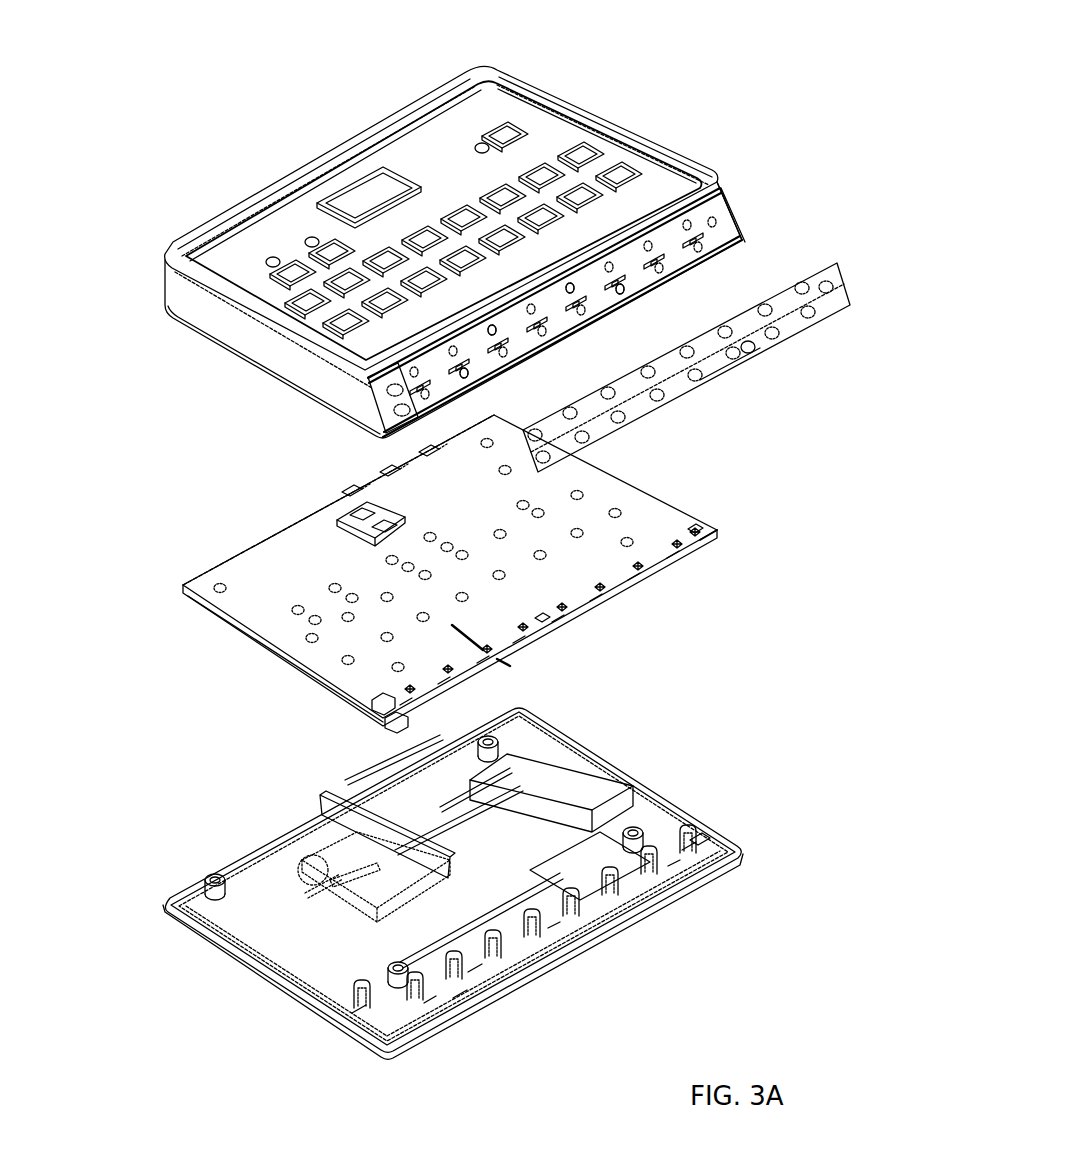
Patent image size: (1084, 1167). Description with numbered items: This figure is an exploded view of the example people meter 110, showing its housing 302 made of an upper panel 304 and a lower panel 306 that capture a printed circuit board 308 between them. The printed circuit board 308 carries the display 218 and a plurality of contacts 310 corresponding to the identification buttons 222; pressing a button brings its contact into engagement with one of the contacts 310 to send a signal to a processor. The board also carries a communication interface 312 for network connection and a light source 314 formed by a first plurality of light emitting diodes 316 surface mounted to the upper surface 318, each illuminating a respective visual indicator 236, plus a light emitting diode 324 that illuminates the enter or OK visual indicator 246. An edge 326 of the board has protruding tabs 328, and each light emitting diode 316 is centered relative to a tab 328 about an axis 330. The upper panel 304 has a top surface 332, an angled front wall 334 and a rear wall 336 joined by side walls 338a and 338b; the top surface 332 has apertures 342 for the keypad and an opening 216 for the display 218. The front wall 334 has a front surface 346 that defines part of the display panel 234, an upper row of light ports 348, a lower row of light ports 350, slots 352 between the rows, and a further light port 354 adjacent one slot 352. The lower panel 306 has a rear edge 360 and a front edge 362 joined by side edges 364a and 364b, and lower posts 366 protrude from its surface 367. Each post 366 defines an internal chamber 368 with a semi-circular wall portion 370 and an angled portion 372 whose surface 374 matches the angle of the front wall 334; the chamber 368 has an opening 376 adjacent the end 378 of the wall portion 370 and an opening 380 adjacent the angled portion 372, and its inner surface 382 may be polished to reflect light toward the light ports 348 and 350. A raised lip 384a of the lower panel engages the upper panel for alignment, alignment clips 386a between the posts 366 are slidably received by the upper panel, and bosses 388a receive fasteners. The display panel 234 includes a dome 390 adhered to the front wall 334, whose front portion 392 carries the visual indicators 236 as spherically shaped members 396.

The people meter 110 is at (740, 133).
The housing 302 is at (162, 207).
The upper panel 304 is at (162, 285).
The lower panel 306 is at (165, 915).
The printed circuit board 308 is at (180, 590).
The contacts 310 is at (505, 504).
The communication interface 312 is at (345, 482).
The light source 314 is at (680, 604).
The first plurality of light emitting diodes 316 is at (537, 622).
The upper surface 318 is at (240, 565).
The opening 216 is at (325, 193).
The display 218 is at (335, 522).
The identification buttons 222 is at (310, 305).
The display panel 234 is at (808, 190).
The visual indicators 236 is at (660, 395).
The enter or OK visual indicator 246 is at (834, 290).
The light emitting diode 324 is at (694, 534).
The edge 326 is at (716, 537).
The protruding tabs 328 is at (685, 560).
The axis 330 is at (525, 660).
The top surface 332 is at (503, 112).
The front wall 334 is at (740, 218).
The rear wall 336 is at (420, 103).
The side wall 338a is at (345, 411).
The side wall 338b is at (585, 112).
The apertures 342 is at (520, 180).
The front surface 346 is at (748, 240).
The upper light ports 348 is at (571, 289).
The lower light ports 350 is at (620, 290).
The slots 352 is at (655, 260).
The light port 354 is at (712, 222).
The rear edge 360 is at (252, 855).
The front edge 362 is at (540, 970).
The side edge 364a is at (268, 985).
The side edge 364b is at (640, 795).
The lower posts 366 is at (715, 850).
The surface 367 is at (498, 823).
The internal chamber 368 is at (475, 975).
The wall portion 370 is at (360, 1010).
The angled portion 372 is at (430, 1000).
The surface 374 is at (460, 995).
The opening 376 is at (480, 950).
The end 378 is at (590, 882).
The opening 380 is at (690, 853).
The inner surface 382 is at (697, 833).
The raised lip 384a is at (400, 1040).
The alignment clips 386a is at (675, 870).
The bosses 388a is at (492, 745).
The dome 390 is at (845, 315).
The front portion 392 is at (750, 346).
The spherically shaped members 396 is at (730, 353).